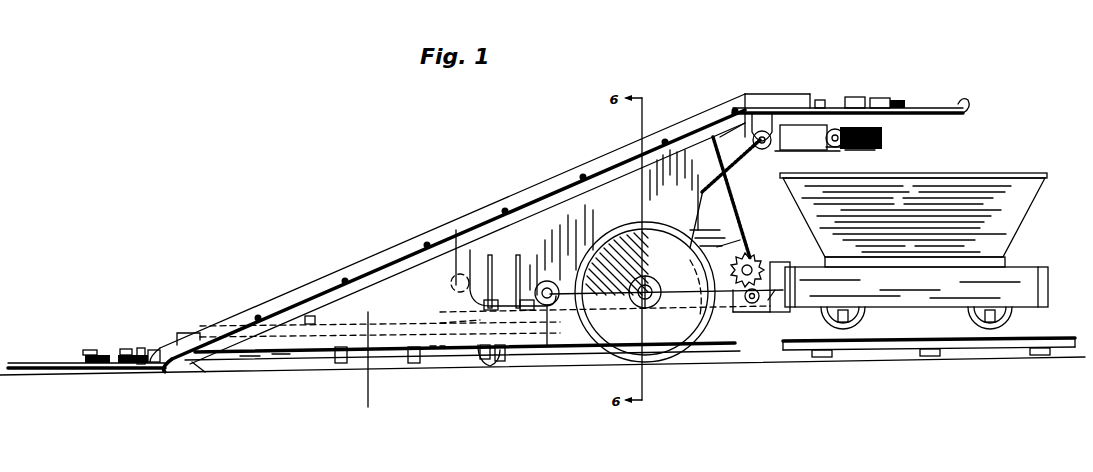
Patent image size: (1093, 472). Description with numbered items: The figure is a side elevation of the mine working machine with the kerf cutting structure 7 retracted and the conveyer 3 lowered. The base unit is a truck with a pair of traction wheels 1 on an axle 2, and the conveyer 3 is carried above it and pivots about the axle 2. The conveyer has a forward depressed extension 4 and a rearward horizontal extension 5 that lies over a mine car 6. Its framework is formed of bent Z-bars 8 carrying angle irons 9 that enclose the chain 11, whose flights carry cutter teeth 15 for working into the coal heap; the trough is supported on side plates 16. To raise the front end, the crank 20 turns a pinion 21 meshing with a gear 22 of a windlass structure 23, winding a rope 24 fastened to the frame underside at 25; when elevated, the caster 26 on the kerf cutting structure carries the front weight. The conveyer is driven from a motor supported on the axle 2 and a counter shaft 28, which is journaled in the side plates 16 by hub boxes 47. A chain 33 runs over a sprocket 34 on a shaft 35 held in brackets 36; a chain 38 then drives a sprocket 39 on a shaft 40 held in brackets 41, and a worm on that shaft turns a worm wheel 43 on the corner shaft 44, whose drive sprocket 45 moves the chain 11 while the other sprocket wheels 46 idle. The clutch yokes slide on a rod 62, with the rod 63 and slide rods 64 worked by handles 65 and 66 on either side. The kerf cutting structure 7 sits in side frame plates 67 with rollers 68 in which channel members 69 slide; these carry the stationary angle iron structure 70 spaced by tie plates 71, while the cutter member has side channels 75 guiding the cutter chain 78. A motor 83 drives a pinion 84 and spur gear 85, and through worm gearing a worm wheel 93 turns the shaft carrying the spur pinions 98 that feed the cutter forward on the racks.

The traction wheels 1 is at (683, 335).
The axle 2 is at (652, 303).
The conveyer 3 is at (377, 278).
The depressed extension 4 is at (59, 360).
The horizontally arranged extension 5 is at (926, 107).
The mine car 6 is at (977, 185).
The kerf cutting structure 7 is at (290, 361).
The Z-bars 8 is at (122, 350).
The angle irons 9 is at (90, 350).
The chain 11 is at (152, 350).
The cutter teeth 15 is at (258, 314).
The side plates 16 is at (545, 270).
The crank 20 is at (752, 304).
The pinion 21 is at (768, 300).
The gear 22 is at (771, 268).
The windlass structure 23 is at (762, 258).
The rope 24 is at (746, 214).
The rope attachment point 25 is at (741, 100).
The caster 26 is at (202, 372).
The counter shaft 28 is at (548, 283).
The chain 33 is at (745, 187).
The sprocket 34 is at (727, 150).
The shaft 35 is at (766, 129).
The brackets 36 is at (758, 125).
The chain 38 is at (800, 152).
The sprocket 39 is at (803, 137).
The shaft 40 is at (832, 150).
The brackets 41 is at (836, 128).
The worm wheel 43 is at (884, 136).
The corner shaft 44 is at (856, 152).
The drive sprocket 45 is at (855, 97).
The idle sprocket wheels 46 is at (140, 348).
The hub boxes 47 is at (545, 333).
The rod 62 is at (500, 308).
The rod 63 is at (491, 280).
The slide rods 64 is at (534, 292).
The handle 65 is at (490, 262).
The handle 66 is at (518, 262).
The side frame plates 67 is at (764, 234).
The rollers 68 is at (272, 358).
The channel members 69 is at (311, 316).
The angle iron structure 70 is at (184, 333).
The tie plates 71 is at (341, 364).
The side channels 75 is at (248, 360).
The cutter chain 78 is at (437, 361).
The motor 83 is at (456, 230).
The pinion 84 is at (449, 288).
The spur gear 85 is at (438, 322).
The worm wheel 93 is at (490, 362).
The spur pinion 98 is at (490, 370).